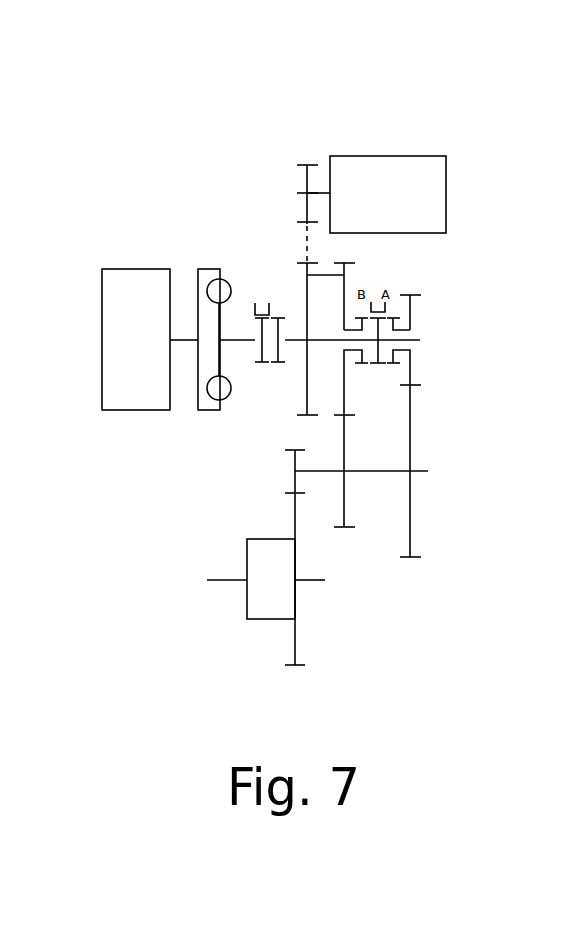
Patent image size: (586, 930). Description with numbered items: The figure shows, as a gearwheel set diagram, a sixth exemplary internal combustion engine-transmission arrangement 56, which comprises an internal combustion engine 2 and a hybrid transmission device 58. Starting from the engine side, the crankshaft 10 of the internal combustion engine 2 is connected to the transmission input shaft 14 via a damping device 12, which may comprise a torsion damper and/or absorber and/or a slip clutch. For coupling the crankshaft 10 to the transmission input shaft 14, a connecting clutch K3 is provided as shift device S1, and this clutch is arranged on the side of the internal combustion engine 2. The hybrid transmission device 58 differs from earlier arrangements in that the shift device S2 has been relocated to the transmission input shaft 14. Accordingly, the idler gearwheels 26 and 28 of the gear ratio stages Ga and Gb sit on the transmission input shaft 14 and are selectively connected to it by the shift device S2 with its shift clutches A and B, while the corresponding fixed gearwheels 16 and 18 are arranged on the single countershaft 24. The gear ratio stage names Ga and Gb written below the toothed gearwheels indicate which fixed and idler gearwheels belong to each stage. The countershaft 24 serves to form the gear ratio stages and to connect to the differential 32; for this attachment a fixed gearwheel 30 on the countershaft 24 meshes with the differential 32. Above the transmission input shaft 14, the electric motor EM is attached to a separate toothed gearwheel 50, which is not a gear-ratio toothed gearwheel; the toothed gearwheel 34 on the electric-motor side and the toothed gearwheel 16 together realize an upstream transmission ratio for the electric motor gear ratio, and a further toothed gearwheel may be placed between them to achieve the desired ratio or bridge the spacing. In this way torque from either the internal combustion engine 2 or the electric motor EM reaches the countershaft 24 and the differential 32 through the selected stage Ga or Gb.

The internal combustion engine 2 is at (109, 298).
The crankshaft 10 is at (177, 342).
The damping device 12 is at (208, 268).
The transmission input shaft 14 is at (321, 338).
The toothed gearwheel (fixed gearwheel) 16 is at (346, 525).
The fixed gearwheel 18 is at (412, 492).
The countershaft 24 is at (430, 462).
The idler gearwheel 26 is at (346, 282).
The idler gearwheel 28 is at (417, 307).
The fixed gearwheel 30 is at (288, 460).
The differential 32 is at (247, 560).
The toothed gearwheel 34 is at (305, 173).
The separate toothed gearwheel 50 is at (350, 275).
The internal combustion engine-transmission arrangement 56 is at (237, 113).
The hybrid transmission device 58 is at (234, 176).
The connecting clutch K3 is at (266, 314).
The shift device S1 is at (265, 372).
The shift device S2 is at (376, 380).
The gear ratio stage Ga is at (341, 548).
The gear ratio stage Gb is at (410, 579).
The electric motor EM is at (388, 194).